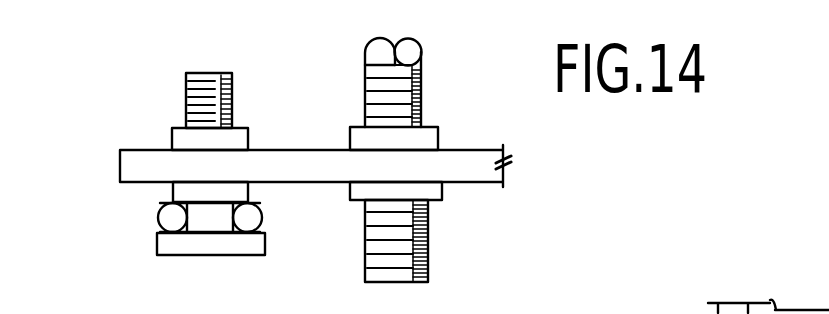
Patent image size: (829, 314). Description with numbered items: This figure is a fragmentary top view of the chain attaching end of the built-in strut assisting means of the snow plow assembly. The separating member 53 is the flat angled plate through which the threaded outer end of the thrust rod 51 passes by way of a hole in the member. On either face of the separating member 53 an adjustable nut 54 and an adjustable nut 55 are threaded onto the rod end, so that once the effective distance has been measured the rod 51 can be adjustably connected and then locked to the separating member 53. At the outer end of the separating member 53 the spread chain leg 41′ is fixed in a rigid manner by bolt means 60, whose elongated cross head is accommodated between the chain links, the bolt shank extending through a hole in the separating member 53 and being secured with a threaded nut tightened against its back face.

The thrust rod 51 is at (365, 66).
The adjustable nut 54 is at (422, 137).
The adjustable nut 55 is at (430, 190).
The separating member 53 is at (307, 183).
The chain leg 41′ is at (160, 216).
The bolt means 60 is at (188, 264).